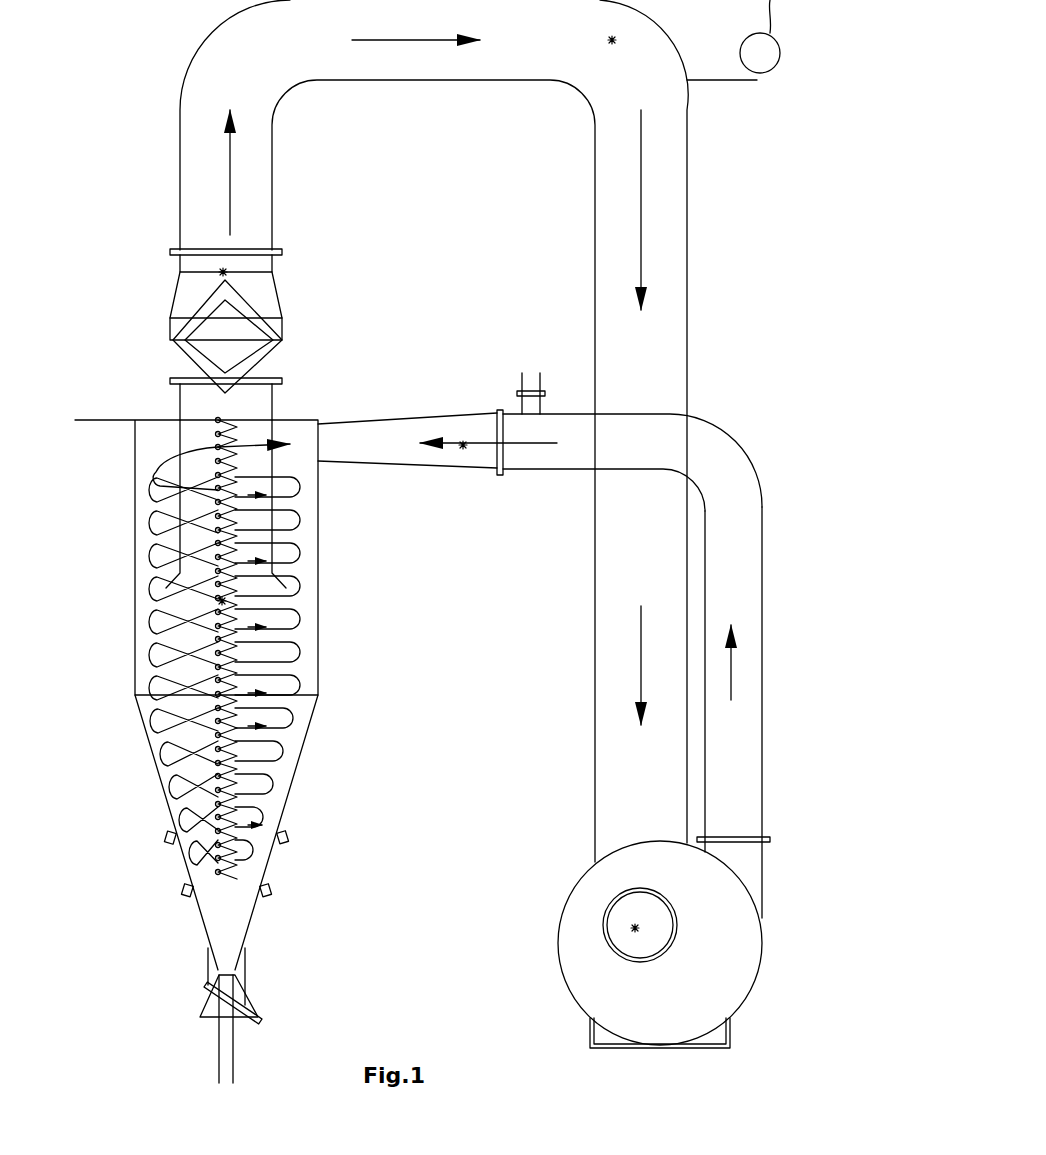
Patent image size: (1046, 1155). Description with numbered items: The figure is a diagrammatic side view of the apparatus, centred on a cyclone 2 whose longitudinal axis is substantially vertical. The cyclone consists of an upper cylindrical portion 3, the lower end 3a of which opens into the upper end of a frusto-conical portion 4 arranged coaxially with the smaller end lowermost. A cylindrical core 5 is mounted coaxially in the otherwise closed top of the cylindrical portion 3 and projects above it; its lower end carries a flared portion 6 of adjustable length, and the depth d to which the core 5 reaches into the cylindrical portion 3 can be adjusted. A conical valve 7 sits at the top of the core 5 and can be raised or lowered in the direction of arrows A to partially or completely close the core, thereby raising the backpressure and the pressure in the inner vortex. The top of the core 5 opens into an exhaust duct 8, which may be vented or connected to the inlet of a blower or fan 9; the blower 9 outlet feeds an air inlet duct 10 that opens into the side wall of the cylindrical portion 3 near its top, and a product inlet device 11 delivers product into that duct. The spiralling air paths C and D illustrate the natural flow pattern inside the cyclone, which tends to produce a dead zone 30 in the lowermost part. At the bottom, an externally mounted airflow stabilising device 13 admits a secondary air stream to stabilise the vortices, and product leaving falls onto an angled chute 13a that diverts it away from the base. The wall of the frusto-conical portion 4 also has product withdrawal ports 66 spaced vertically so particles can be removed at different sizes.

The cyclone 2 is at (232, 675).
The upper cylindrical portion 3 is at (322, 548).
The lower end of cylindrical portion 3a is at (308, 692).
The frusto-conical portion 4 is at (275, 853).
The cylindrical core 5 is at (180, 403).
The flared portion 6 is at (285, 582).
The conical valve 7 is at (196, 357).
The exhaust duct 8 is at (183, 218).
The blower or fan 9 is at (740, 955).
The air inlet duct 10 is at (764, 613).
The product inlet device 11 is at (520, 383).
The airflow stabilising device 13 is at (242, 985).
The angled chute 13a is at (205, 985).
The dead zone 30 is at (205, 913).
The product withdrawal ports 66 is at (168, 835).
The direction of valve movement A is at (313, 243).
The flow path C is at (300, 523).
The flow direction D is at (240, 735).
The immersion depth d is at (287, 588).